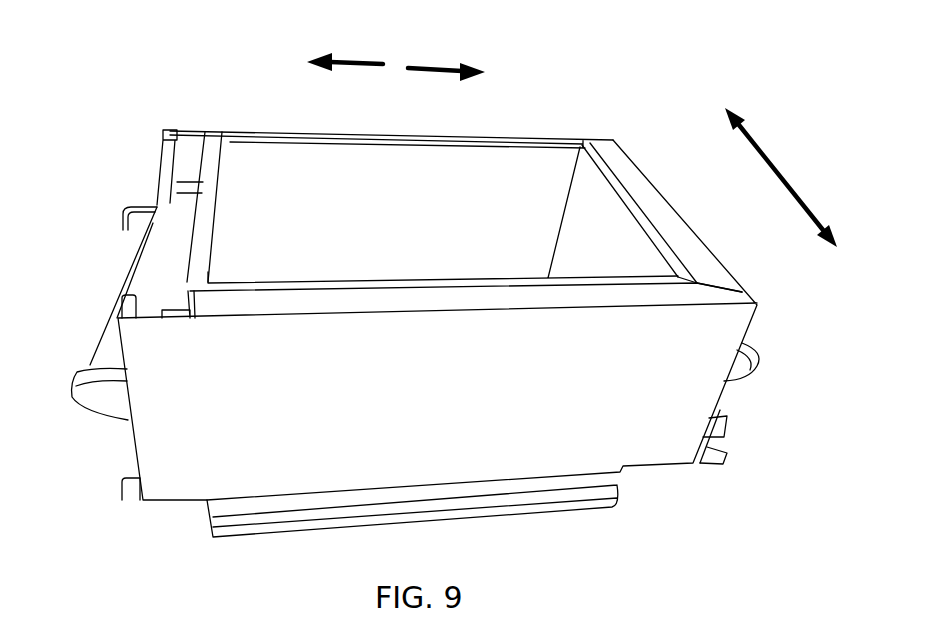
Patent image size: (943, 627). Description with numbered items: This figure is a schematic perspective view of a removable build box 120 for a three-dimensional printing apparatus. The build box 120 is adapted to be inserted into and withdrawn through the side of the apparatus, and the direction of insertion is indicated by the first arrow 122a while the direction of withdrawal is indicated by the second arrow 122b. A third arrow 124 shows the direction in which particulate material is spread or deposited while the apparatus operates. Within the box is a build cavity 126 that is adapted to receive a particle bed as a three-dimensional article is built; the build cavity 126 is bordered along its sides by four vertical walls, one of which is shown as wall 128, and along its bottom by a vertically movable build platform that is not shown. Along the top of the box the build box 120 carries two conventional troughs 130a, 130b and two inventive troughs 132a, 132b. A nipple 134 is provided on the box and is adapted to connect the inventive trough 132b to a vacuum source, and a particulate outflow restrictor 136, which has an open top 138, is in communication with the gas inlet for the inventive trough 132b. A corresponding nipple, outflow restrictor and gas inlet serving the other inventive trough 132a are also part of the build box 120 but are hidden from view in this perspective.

The build box 120 is at (562, 57).
The first arrow 122a is at (382, 38).
The second arrow 122b is at (422, 68).
The third arrow 124 is at (780, 175).
The build cavity 126 is at (282, 250).
The wall 128 is at (256, 160).
The conventional trough 130a is at (185, 217).
The conventional trough 130b is at (690, 251).
The inventive trough 132a is at (572, 141).
The inventive trough 132b is at (663, 296).
The nipple 134 is at (137, 500).
The particulate outflow restrictor 136 is at (712, 445).
The open top 138 is at (717, 418).